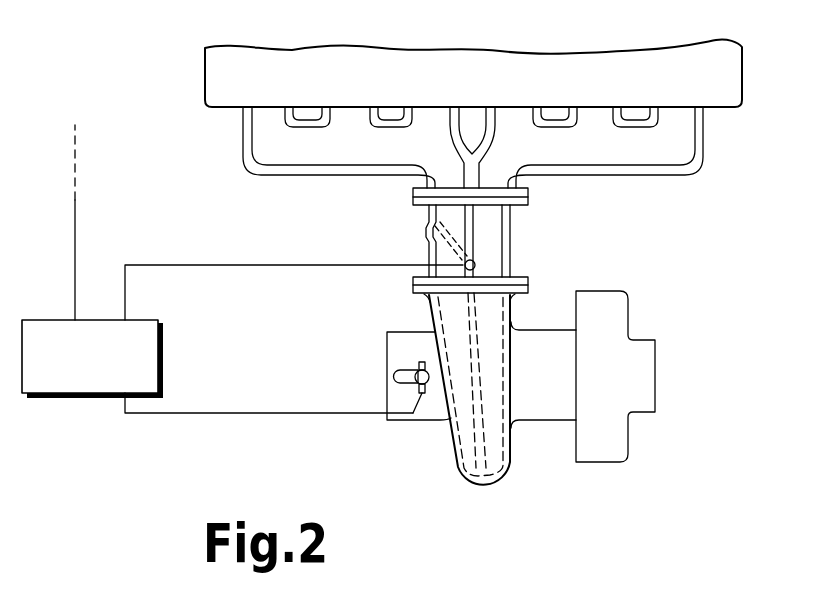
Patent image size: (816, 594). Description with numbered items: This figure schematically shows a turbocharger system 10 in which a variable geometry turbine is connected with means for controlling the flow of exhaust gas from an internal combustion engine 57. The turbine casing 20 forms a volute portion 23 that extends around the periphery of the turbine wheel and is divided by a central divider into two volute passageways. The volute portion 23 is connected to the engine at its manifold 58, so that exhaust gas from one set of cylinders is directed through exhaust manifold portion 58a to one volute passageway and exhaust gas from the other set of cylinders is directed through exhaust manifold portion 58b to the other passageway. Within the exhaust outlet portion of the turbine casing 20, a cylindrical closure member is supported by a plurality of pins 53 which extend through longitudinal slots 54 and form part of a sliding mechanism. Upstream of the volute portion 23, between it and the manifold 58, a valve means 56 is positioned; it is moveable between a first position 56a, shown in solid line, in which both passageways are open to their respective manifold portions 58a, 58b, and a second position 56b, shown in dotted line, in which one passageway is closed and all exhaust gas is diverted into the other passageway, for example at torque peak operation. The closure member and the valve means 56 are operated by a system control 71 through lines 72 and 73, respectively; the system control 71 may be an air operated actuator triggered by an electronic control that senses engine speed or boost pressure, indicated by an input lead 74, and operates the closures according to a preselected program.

The fuel injector assembly 10 is at (588, 275).
The turbine casing 20 is at (425, 427).
The volute portion 23 is at (458, 470).
The pins 53 is at (415, 372).
The longitudinal slots 54 is at (402, 382).
The valve means 56 is at (487, 256).
The first position 56a is at (473, 238).
The second position 56b is at (442, 240).
The internal combustion engine 57 is at (743, 50).
The manifold 58 is at (340, 180).
The exhaust manifold portion 58a is at (243, 166).
The exhaust manifold portion 58b is at (703, 166).
The system control 71 is at (162, 332).
The line 72 is at (240, 414).
The line 73 is at (223, 263).
The input lead 74 is at (77, 257).